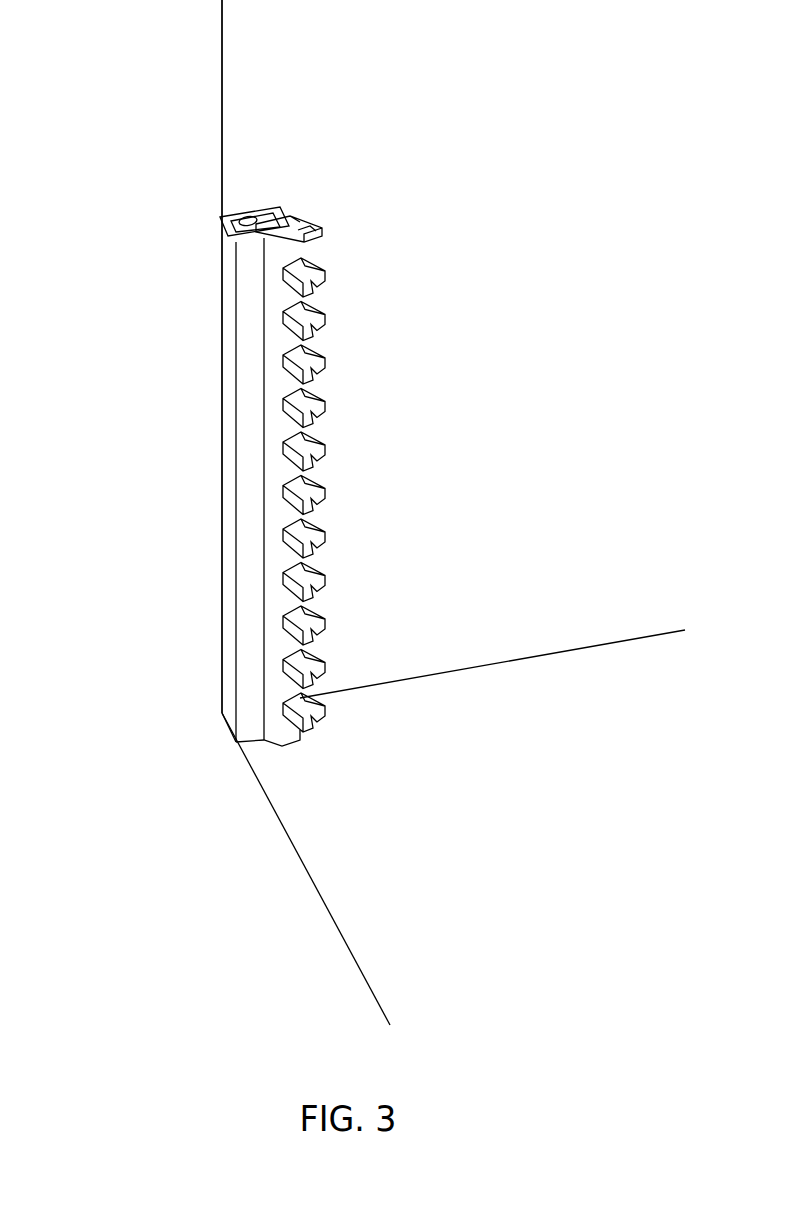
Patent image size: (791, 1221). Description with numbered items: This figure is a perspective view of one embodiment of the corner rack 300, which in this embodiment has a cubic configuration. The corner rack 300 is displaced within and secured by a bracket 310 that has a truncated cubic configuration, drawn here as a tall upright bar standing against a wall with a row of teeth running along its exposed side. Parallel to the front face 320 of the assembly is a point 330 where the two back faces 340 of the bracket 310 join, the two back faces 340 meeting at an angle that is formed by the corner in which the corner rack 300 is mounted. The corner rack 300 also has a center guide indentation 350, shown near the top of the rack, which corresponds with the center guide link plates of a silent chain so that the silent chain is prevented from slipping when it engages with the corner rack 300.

The corner rack 300 is at (404, 431).
The bracket 310 is at (194, 424).
The front face 320 is at (322, 237).
The point 330 is at (222, 215).
The back faces 340 is at (255, 208).
The center guide indentation 350 is at (297, 235).